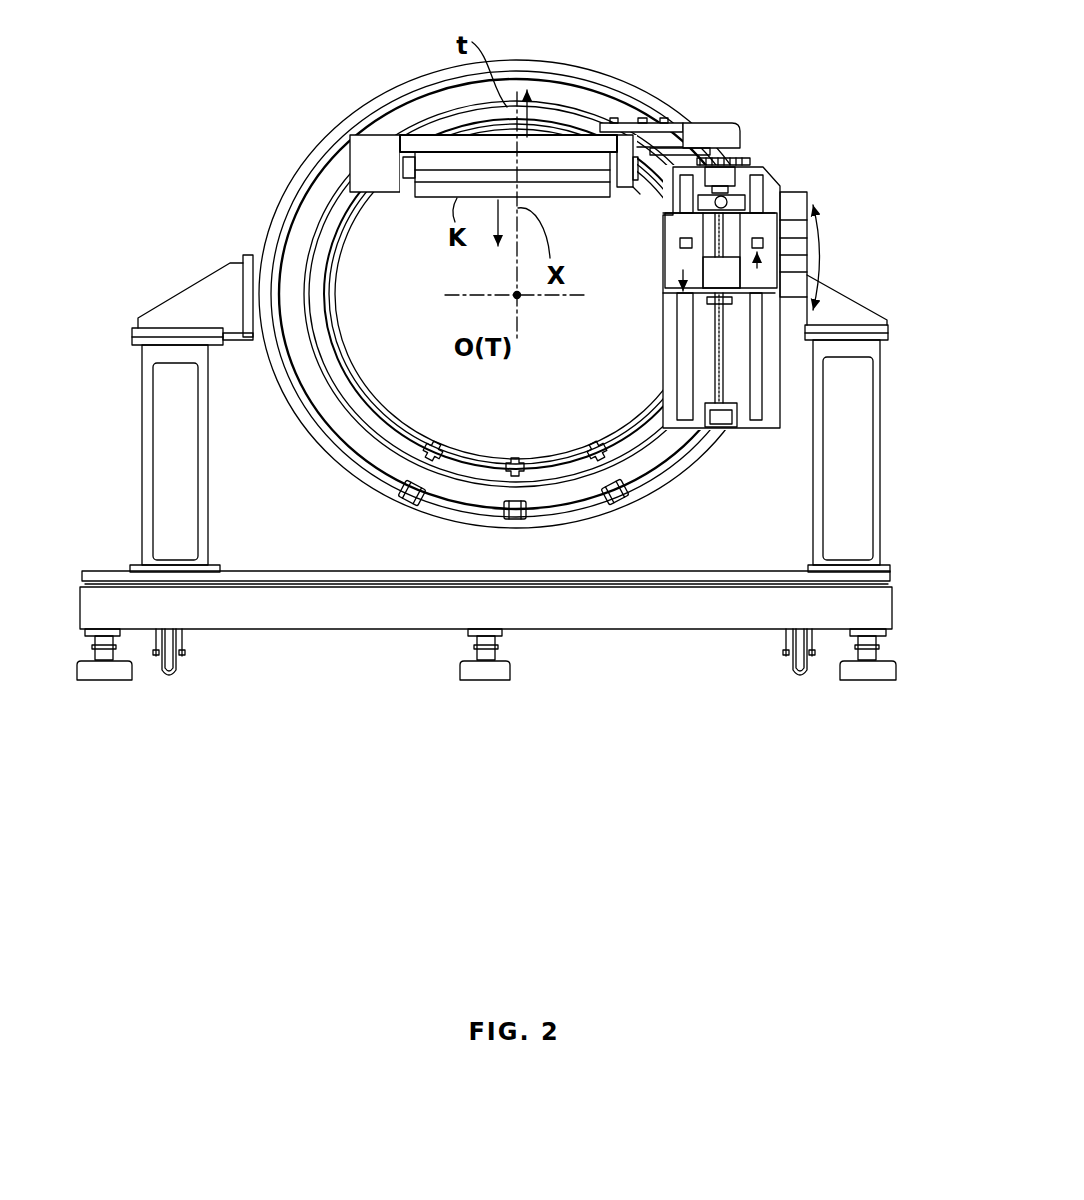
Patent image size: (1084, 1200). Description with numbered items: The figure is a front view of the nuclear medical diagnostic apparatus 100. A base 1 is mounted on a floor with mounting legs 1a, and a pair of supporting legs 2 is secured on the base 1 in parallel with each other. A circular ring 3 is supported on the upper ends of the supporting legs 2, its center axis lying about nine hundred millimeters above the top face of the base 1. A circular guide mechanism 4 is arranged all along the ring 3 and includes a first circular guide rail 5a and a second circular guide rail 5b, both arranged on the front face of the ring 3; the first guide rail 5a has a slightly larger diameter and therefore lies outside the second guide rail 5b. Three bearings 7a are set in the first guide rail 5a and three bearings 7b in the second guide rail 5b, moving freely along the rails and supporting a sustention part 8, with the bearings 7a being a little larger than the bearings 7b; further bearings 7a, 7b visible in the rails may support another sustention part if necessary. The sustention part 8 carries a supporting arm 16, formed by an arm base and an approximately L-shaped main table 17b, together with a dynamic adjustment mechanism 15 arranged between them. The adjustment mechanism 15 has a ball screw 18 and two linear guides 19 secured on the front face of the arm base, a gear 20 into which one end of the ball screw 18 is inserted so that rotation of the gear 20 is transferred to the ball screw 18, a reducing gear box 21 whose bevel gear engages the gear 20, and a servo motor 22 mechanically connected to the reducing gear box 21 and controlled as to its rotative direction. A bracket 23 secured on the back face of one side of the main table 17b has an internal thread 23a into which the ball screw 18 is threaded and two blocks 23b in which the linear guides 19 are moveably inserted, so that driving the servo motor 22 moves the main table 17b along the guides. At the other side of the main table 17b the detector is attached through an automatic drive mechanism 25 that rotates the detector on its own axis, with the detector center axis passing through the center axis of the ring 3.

The base 1 is at (281, 571).
The mounting legs 1a is at (130, 681).
The supporting legs 2 is at (142, 478).
The circular ring 3 is at (519, 66).
The circular guide mechanism 4 is at (496, 294).
The first circular guide rail 5a is at (312, 168).
The second circular guide rail 5b is at (328, 232).
The bearings 7a is at (503, 515).
The bearings 7b is at (437, 449).
The sustention part 8 is at (756, 144).
The dynamic adjustment mechanism 15 is at (707, 326).
The supporting arm 16 is at (821, 218).
The main table 17b is at (653, 193).
The ball screw 18 is at (720, 365).
The linear guides 19 is at (683, 333).
The gear 20 is at (760, 165).
The reducing gear box 21 is at (715, 123).
The servo motor 22 is at (616, 122).
The bracket 23 is at (760, 230).
The internal thread 23a is at (710, 276).
The blocks 23b is at (687, 263).
The automatic drive mechanism 25 is at (375, 156).
The nuclear medical diagnostic apparatus 100 is at (362, 834).